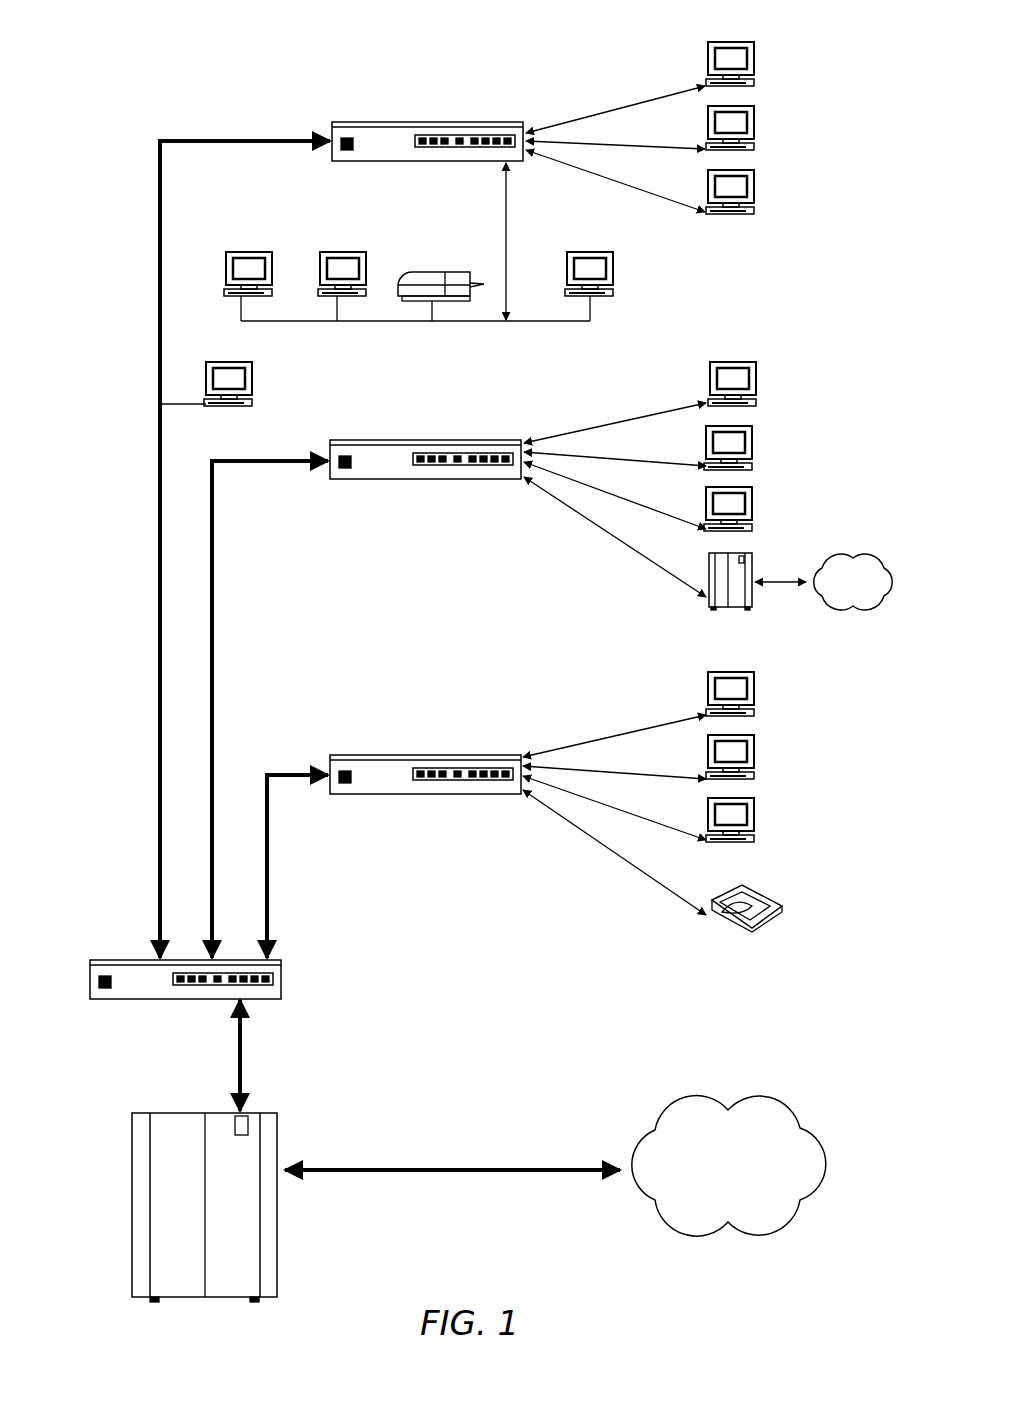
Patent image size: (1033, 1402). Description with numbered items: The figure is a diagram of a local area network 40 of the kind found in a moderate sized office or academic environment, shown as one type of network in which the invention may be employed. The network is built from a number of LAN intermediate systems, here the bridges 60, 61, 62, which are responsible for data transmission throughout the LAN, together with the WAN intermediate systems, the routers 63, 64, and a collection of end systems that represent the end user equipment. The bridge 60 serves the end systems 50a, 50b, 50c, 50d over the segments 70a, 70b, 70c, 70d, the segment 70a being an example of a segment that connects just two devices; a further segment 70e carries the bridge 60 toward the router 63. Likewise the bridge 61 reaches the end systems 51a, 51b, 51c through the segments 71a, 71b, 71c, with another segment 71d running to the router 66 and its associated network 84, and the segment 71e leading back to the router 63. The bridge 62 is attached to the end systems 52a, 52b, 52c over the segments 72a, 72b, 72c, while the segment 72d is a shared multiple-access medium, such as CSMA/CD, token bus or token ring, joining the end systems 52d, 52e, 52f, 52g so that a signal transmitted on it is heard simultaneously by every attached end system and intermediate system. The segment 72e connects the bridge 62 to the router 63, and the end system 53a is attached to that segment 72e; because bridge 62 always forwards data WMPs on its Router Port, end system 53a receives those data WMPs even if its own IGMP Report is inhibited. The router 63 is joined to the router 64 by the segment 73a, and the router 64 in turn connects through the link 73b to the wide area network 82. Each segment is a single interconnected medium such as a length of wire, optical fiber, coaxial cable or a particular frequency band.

The local area network 40 is at (104, 524).
The end system 50a is at (756, 678).
The end system 50b is at (756, 763).
The end system 50c is at (756, 823).
The end system 50d is at (756, 896).
The end system 51a is at (758, 372).
The end system 51b is at (756, 440).
The end system 51c is at (756, 500).
The end system 52a is at (756, 60).
The end system 52b is at (756, 124).
The end system 52c is at (756, 189).
The end system 52d is at (616, 268).
The end system 52e is at (428, 275).
The end system 52f is at (343, 254).
The end system 52g is at (236, 254).
The end system 53a is at (216, 363).
The bridge 60 is at (428, 755).
The bridge 61 is at (427, 440).
The bridge 62 is at (430, 122).
The router 63 is at (136, 960).
The router 64 is at (132, 1163).
The router 66 is at (756, 571).
The segment 70a is at (628, 724).
The segment 70b is at (622, 772).
The segment 70c is at (622, 810).
The segment 70d is at (620, 851).
The segment 70e is at (270, 775).
The segment 71a is at (612, 415).
The segment 71b is at (606, 456).
The segment 71c is at (614, 493).
The segment 71d is at (610, 531).
The segment 71e is at (240, 461).
The segment 72a is at (608, 103).
The segment 72b is at (606, 140).
The segment 72c is at (618, 178).
The segment 72d is at (508, 215).
The segment 72e is at (243, 141).
The segment 73a is at (243, 1069).
The link 73b is at (456, 1166).
The WAN1 82 is at (776, 1096).
The WAN2 84 is at (846, 557).